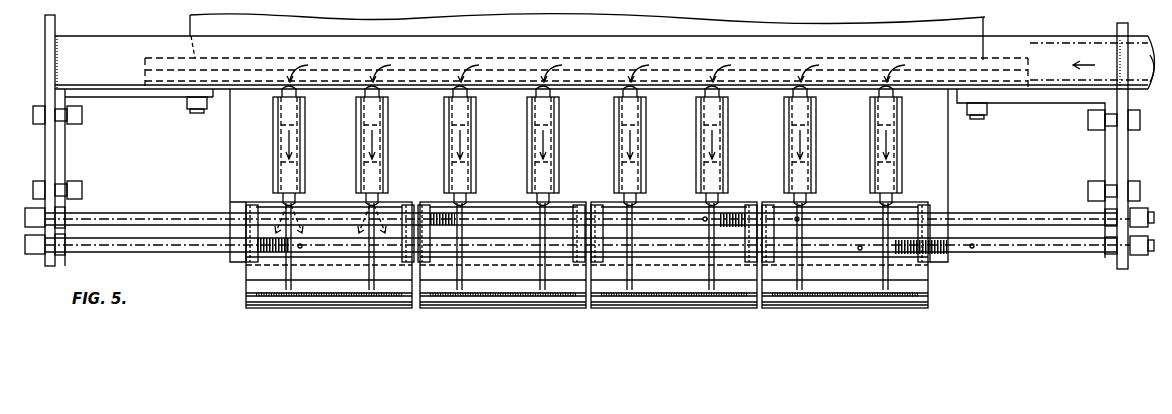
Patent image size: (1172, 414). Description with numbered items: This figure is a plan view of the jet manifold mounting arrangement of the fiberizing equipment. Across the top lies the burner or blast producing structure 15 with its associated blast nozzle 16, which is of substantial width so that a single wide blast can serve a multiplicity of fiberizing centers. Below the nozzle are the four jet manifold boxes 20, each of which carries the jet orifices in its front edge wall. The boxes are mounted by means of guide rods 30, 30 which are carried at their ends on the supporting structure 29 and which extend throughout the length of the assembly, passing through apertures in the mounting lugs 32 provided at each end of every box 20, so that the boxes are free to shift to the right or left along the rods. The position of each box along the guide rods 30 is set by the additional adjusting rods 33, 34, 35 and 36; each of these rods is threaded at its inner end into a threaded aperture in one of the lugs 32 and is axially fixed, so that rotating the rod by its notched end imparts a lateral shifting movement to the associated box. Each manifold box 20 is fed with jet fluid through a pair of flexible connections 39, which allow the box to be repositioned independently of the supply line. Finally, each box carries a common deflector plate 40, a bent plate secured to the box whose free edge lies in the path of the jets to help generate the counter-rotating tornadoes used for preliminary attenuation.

The burner or blast producing structure 15 is at (190, 19).
The blast nozzle 16 is at (230, 144).
The jet manifold box 20 is at (340, 319).
The supporting structure 29 is at (48, 33).
The guide rods 30 is at (180, 245).
The mounting lug 32 is at (248, 214).
The adjusting rod 33 is at (283, 240).
The adjusting rod 34 is at (958, 250).
The adjusting rod 35 is at (23, 212).
The adjusting rod 36 is at (722, 226).
The flexible connections 39 is at (358, 154).
The deflector plate 40 is at (373, 308).